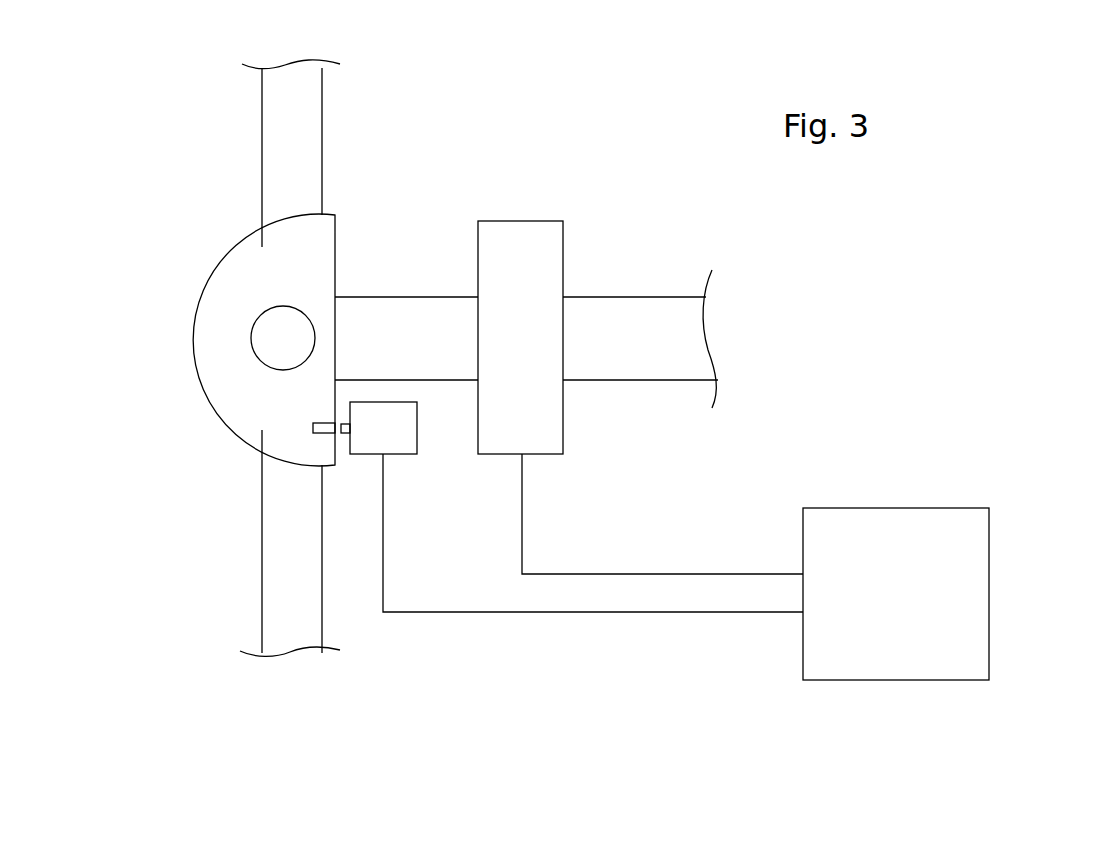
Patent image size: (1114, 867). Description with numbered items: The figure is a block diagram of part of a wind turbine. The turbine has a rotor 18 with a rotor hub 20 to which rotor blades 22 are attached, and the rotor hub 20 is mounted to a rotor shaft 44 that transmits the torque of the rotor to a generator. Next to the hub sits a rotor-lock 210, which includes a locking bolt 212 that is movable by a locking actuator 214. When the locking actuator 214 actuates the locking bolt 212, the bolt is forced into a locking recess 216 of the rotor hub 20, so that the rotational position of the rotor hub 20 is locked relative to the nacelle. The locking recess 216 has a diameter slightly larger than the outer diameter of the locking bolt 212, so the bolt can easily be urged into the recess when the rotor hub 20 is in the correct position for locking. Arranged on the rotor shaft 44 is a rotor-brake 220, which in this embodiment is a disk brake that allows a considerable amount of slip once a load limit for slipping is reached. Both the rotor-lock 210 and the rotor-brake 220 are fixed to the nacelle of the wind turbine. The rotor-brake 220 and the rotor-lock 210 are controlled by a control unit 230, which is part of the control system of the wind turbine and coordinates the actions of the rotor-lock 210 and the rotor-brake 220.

The rotor 18 is at (215, 245).
The rotor hub 20 is at (246, 415).
The rotor blades 22 is at (262, 142).
The rotor shaft 44 is at (395, 297).
The rotor-lock 210 is at (550, 493).
The locking bolt 212 is at (346, 434).
The locking actuator 214 is at (417, 437).
The locking recess 216 is at (326, 423).
The rotor-brake 220 is at (537, 221).
The control unit 230 is at (989, 570).